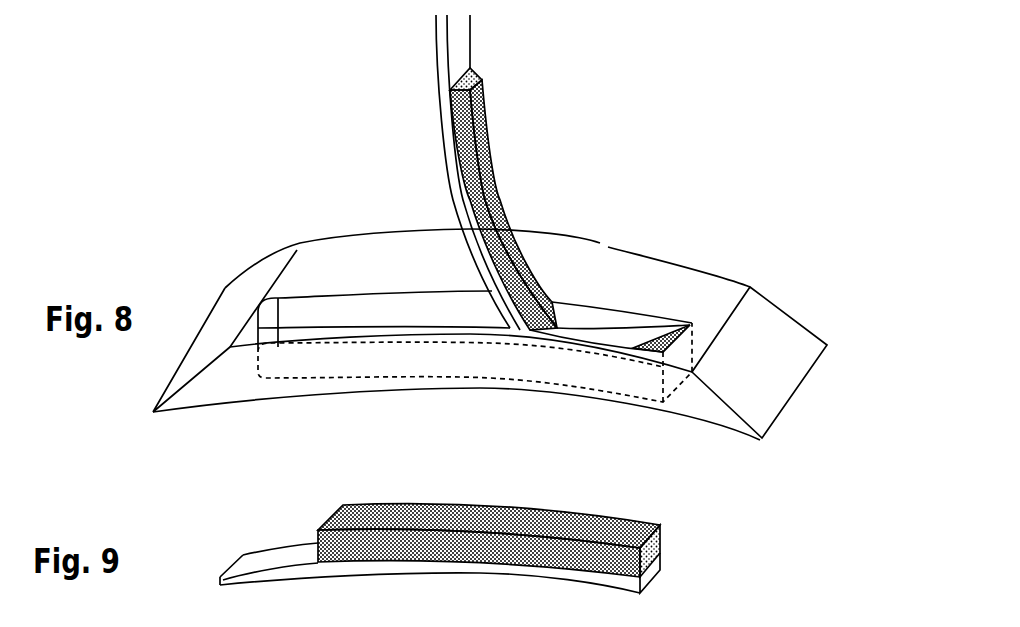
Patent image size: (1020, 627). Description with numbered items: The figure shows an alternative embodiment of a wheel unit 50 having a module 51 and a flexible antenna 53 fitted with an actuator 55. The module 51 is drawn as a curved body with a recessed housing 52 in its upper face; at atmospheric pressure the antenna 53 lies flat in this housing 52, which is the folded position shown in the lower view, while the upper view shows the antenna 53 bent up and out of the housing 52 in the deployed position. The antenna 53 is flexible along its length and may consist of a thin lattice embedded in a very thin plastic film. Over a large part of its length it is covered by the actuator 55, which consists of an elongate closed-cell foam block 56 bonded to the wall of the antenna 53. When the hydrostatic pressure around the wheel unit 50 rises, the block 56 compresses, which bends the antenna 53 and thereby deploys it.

In FIG. 8, the wheel unit 50 is at (672, 447).
In FIG. 8, the module 51 is at (743, 347).
In FIG. 8, the housing 52 is at (303, 315).
In FIG. 8, the antenna 53 is at (458, 50).
In FIG. 9, the antenna 53 is at (275, 558).
In FIG. 8, the actuator 55 is at (533, 215).
In FIG. 8, the elongate closed-cell foam block 56 is at (490, 143).
In FIG. 9, the elongate closed-cell foam block 56 is at (473, 518).